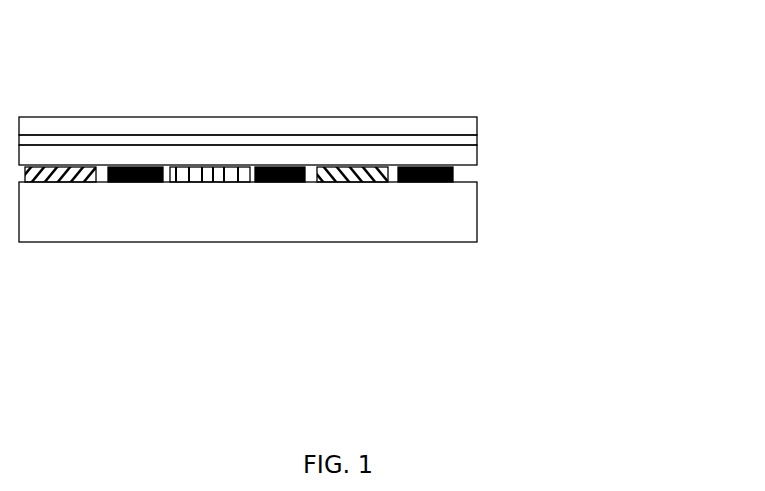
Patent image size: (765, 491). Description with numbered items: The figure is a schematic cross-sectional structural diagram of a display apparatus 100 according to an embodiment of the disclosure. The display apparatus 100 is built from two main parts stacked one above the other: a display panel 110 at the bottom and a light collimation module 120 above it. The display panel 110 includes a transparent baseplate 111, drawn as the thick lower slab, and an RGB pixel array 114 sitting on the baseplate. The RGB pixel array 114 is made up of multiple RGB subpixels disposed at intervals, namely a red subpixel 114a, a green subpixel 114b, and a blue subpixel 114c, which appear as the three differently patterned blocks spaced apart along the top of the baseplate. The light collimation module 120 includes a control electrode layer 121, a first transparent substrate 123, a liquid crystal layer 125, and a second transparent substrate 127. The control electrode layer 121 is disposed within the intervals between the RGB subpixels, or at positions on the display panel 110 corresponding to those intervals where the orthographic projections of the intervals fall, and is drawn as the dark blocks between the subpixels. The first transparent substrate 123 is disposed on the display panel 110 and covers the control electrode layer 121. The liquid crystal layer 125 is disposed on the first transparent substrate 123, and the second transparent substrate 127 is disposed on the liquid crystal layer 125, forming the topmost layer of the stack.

The display apparatus 100 is at (256, 30).
The display panel 110 is at (297, 350).
The transparent baseplate 111 is at (25, 242).
The RGB pixel array 114 is at (447, 300).
The red subpixel 114a is at (78, 183).
The green subpixel 114b is at (213, 183).
The blue subpixel 114c is at (362, 183).
The light collimation module 120 is at (597, 97).
The control electrode layer 121 is at (455, 178).
The first transparent substrate 123 is at (477, 163).
The liquid crystal layer 125 is at (477, 143).
The second transparent substrate 127 is at (477, 122).